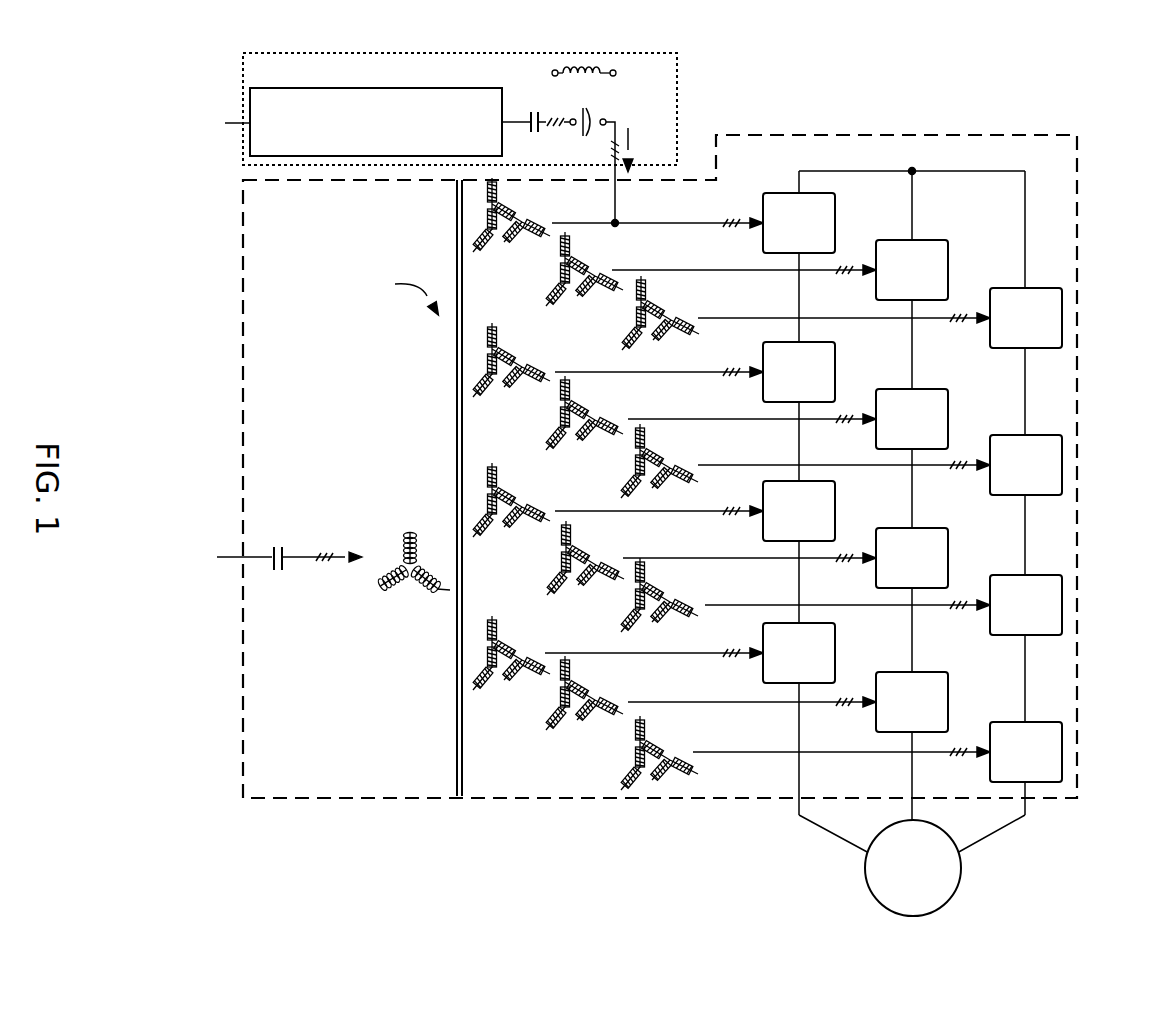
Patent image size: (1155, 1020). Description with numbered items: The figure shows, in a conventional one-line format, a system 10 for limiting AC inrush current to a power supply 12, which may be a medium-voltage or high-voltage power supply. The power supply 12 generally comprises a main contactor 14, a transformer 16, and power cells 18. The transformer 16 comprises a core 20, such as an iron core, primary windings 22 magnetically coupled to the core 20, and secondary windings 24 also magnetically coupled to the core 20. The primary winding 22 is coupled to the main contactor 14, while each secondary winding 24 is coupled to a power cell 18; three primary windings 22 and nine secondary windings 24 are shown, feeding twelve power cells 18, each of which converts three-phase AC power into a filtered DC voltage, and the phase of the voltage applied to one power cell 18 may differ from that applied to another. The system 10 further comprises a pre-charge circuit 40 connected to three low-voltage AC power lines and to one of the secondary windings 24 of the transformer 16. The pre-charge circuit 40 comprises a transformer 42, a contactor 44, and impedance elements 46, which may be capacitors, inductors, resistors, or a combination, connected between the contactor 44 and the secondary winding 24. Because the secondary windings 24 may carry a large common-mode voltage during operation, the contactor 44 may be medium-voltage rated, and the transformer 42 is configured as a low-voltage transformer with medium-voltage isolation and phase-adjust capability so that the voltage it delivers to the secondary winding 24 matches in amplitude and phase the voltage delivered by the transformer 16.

The system 10 is at (735, 55).
The power supply 12 is at (1078, 258).
The main contactor 14 is at (281, 574).
The transformer 16 is at (381, 696).
The power cell 18 is at (1063, 437).
The core 20 is at (455, 632).
The primary winding 22 is at (410, 530).
The secondary winding 24 is at (630, 470).
The pre-charge circuit 40 is at (240, 78).
The transformer 42 is at (503, 128).
The contactor 44 is at (533, 108).
The impedance elements 46 is at (588, 140).